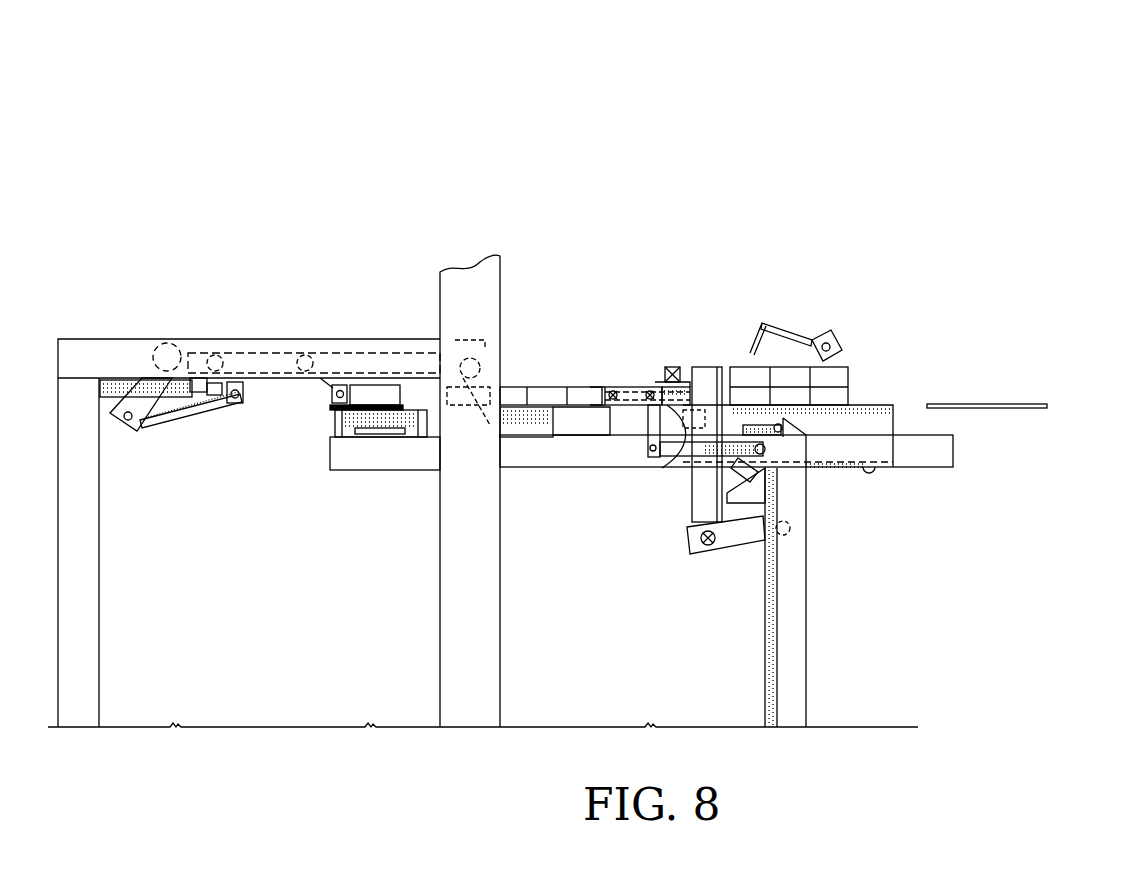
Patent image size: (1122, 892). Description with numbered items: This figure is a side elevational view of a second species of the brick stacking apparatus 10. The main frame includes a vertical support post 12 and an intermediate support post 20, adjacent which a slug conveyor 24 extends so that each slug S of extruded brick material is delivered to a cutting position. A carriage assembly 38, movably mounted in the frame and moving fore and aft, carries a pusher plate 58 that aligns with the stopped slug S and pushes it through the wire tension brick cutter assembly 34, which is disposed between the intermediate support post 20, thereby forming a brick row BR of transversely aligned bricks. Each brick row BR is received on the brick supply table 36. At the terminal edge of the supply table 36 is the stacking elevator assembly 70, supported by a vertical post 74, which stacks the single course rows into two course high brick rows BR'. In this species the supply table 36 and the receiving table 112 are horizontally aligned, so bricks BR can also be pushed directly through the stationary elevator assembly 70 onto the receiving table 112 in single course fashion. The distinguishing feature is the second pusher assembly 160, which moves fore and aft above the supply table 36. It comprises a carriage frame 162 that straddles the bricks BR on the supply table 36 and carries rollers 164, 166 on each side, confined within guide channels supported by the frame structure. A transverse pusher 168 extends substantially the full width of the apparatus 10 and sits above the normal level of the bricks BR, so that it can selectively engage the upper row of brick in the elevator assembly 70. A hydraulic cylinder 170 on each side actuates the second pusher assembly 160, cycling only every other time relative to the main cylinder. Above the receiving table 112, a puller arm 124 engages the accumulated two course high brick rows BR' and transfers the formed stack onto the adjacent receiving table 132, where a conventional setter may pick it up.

The brick stacking apparatus 10 is at (518, 118).
The vertical support post 12 is at (99, 622).
The intermediate support post 20 is at (500, 624).
The slug conveyor 24 is at (313, 418).
The brick cutter assembly 34 is at (488, 366).
The brick supply table 36 is at (667, 462).
The carriage assembly 38 is at (277, 348).
The pusher plate 58 is at (360, 397).
The stacking elevator assembly 70 is at (723, 353).
The vertical post 74 is at (807, 663).
The receiving table 112 is at (873, 405).
The puller arm 124 is at (805, 334).
The adjacent receiving table 132 is at (1010, 398).
The second pusher assembly 160 is at (697, 325).
The carriage frame 162 is at (638, 385).
The roller 164 is at (615, 385).
The roller 166 is at (640, 405).
The transverse pusher 168 is at (682, 366).
The hydraulic cylinder 170 is at (714, 471).
The slug S is at (393, 393).
The brick row BR is at (551, 371).
The two course high brick row BR' is at (821, 356).